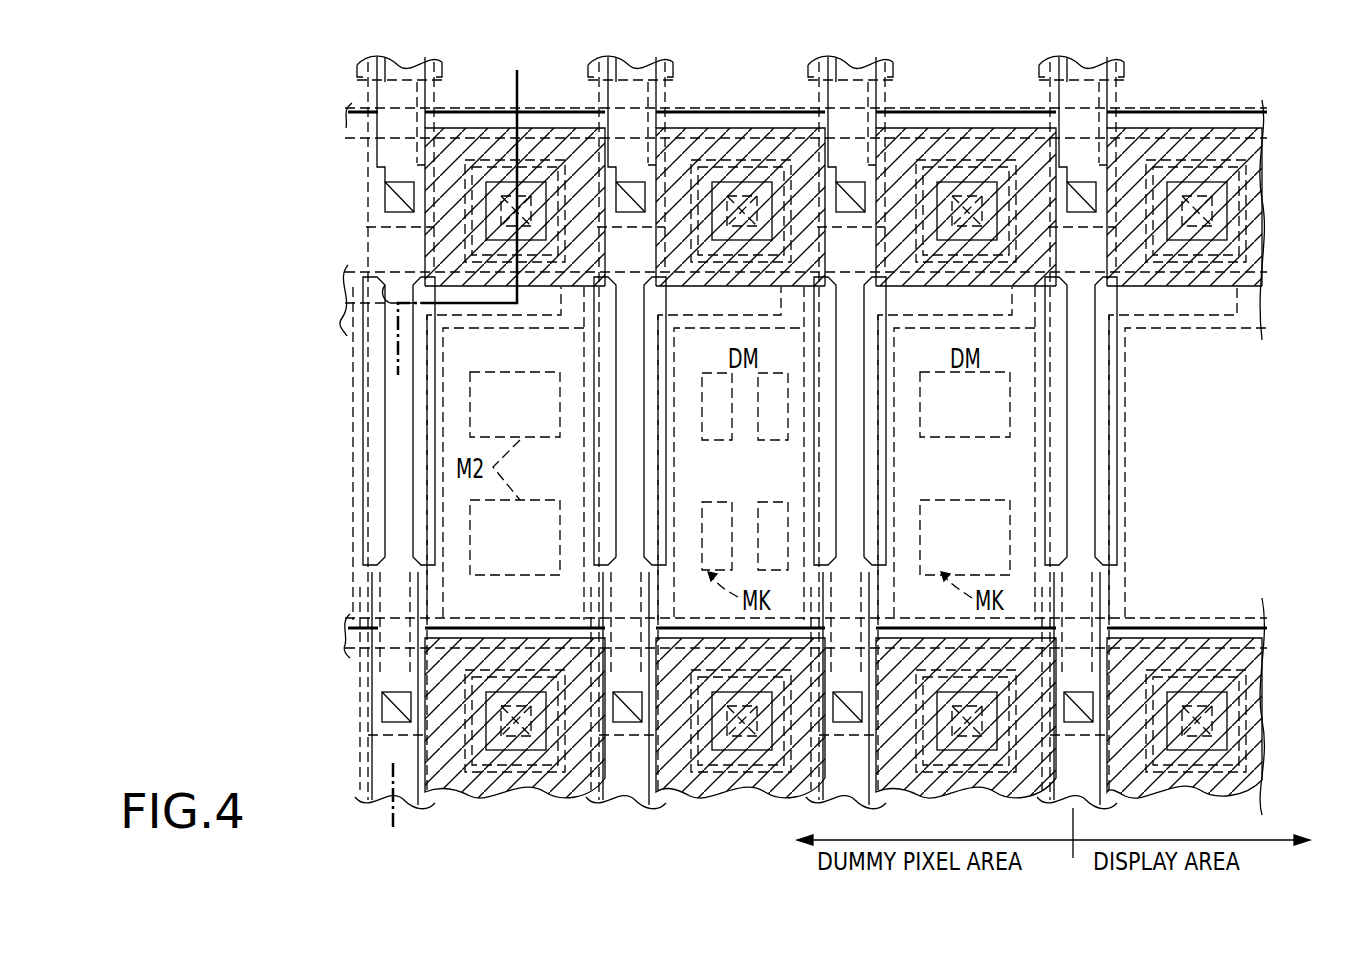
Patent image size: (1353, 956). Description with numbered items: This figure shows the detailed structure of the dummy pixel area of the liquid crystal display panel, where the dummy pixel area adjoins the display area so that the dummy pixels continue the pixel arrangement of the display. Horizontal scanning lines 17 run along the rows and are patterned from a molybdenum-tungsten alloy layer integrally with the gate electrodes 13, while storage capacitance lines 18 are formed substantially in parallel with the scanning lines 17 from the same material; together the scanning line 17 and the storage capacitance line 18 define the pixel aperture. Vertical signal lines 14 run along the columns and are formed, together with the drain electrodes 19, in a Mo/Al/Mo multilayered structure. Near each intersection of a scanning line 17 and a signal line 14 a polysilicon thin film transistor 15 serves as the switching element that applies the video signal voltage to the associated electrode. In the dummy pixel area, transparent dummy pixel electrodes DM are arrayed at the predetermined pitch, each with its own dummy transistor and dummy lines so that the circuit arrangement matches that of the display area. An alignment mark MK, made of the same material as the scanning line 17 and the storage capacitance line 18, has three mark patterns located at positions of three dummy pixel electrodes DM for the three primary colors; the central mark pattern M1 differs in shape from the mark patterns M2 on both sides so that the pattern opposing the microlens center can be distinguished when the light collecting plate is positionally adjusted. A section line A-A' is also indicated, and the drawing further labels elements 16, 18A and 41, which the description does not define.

The gate electrode 13 is at (777, 668).
The signal line 14 is at (345, 421).
The polysilicon thin film transistor 15 is at (361, 688).
The contact hole 16 is at (368, 199).
The scanning line 17 is at (839, 346).
The storage capacitance line 18 is at (1216, 453).
The dummy pixel electrode 18A is at (358, 453).
The drain electrode 19 is at (1196, 158).
The light shielding film 41 is at (830, 265).
The section line A is at (453, 449).
The section line A' is at (346, 305).
The dummy pixel electrode DM is at (515, 390).
The central mark pattern M1 is at (734, 471).
The mark pattern M2 is at (965, 473).
The alignment mark MK is at (515, 558).